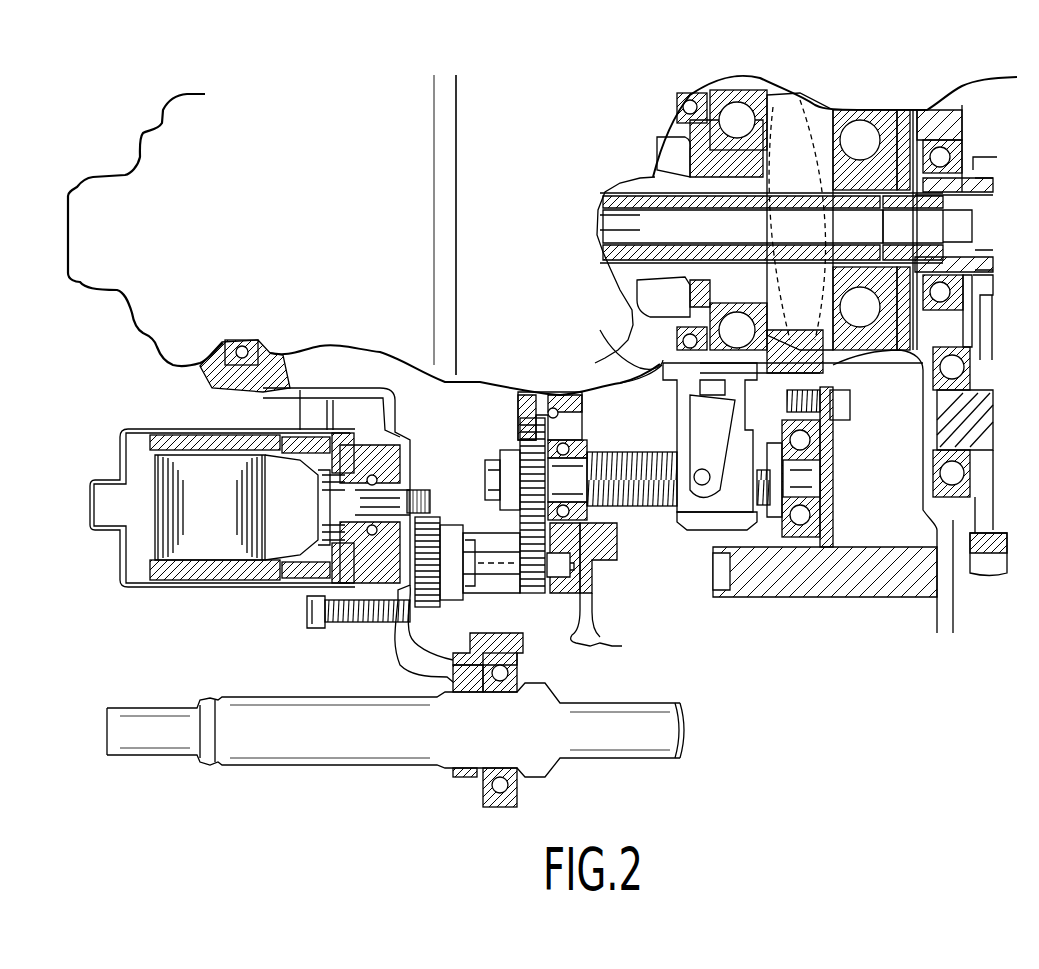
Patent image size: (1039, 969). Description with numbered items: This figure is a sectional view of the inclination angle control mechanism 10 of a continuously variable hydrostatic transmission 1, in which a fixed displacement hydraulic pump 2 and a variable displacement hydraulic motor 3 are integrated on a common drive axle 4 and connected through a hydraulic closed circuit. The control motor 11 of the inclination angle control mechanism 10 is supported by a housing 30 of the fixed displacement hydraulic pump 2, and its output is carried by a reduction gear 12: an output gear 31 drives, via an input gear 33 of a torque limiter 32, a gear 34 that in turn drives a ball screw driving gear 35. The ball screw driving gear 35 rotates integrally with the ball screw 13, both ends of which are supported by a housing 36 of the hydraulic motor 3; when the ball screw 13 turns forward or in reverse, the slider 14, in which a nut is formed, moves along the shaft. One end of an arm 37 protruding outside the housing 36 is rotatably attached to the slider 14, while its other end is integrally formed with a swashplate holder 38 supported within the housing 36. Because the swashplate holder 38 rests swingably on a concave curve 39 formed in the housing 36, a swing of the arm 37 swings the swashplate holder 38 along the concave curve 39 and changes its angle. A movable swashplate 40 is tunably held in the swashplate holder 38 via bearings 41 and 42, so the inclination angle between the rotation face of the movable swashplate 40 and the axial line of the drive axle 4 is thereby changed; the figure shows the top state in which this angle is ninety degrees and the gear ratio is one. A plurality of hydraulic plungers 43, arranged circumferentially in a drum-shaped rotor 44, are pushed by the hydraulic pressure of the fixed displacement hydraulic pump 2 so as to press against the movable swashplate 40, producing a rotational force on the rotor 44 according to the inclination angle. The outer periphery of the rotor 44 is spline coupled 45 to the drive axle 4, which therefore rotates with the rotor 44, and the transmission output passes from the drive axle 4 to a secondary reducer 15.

The continuously variable hydrostatic transmission 1 is at (103, 143).
The fixed displacement hydraulic pump 2 is at (310, 209).
The variable displacement hydraulic motor 3 is at (505, 262).
The drive axle 4 is at (715, 203).
The inclination angle control mechanism 10 is at (268, 650).
The control motor 11 is at (160, 550).
The reduction gear 12 is at (552, 618).
The ball screw 13 is at (645, 510).
The slider 14 is at (713, 520).
The secondary reducer 15 is at (1005, 580).
The housing 30 is at (350, 390).
The output gear 31 is at (418, 490).
The torque limiter 32 is at (448, 525).
The input gear 33 is at (395, 633).
The gear 34 is at (523, 630).
The ball screw driving gear 35 is at (527, 440).
The housing 36 is at (810, 360).
The arm 37 is at (680, 440).
The swashplate holder 38 is at (838, 221).
The concave curve 39 is at (822, 112).
The movable swashplate 40 is at (660, 318).
The bearing 41 is at (670, 353).
The bearing 42 is at (748, 327).
The hydraulic plunger 43 is at (657, 157).
The drum-shaped rotor 44 is at (623, 177).
The spline coupling 45 is at (617, 183).